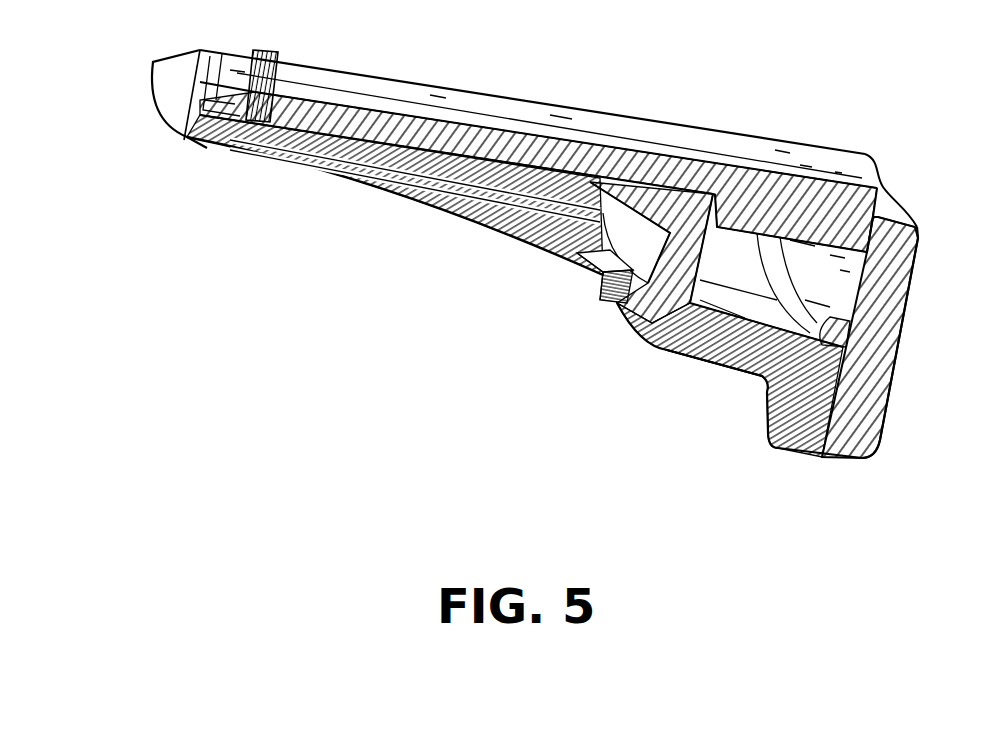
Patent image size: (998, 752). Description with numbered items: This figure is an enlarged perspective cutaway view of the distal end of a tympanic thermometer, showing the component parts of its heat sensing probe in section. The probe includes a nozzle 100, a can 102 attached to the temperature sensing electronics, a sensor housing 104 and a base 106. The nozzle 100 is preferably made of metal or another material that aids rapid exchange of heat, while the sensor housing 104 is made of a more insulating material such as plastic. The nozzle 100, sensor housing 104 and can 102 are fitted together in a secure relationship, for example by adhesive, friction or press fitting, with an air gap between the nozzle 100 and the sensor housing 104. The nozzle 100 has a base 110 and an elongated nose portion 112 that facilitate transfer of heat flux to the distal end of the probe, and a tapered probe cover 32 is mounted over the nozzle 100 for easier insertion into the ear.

The nozzle 100 is at (574, 268).
The can 102 is at (296, 102).
The sensor housing 104 is at (467, 142).
The probe cover 32 is at (495, 220).
The elongated nose portion 112 is at (588, 195).
The base 110 is at (762, 390).
The base 106 is at (863, 407).